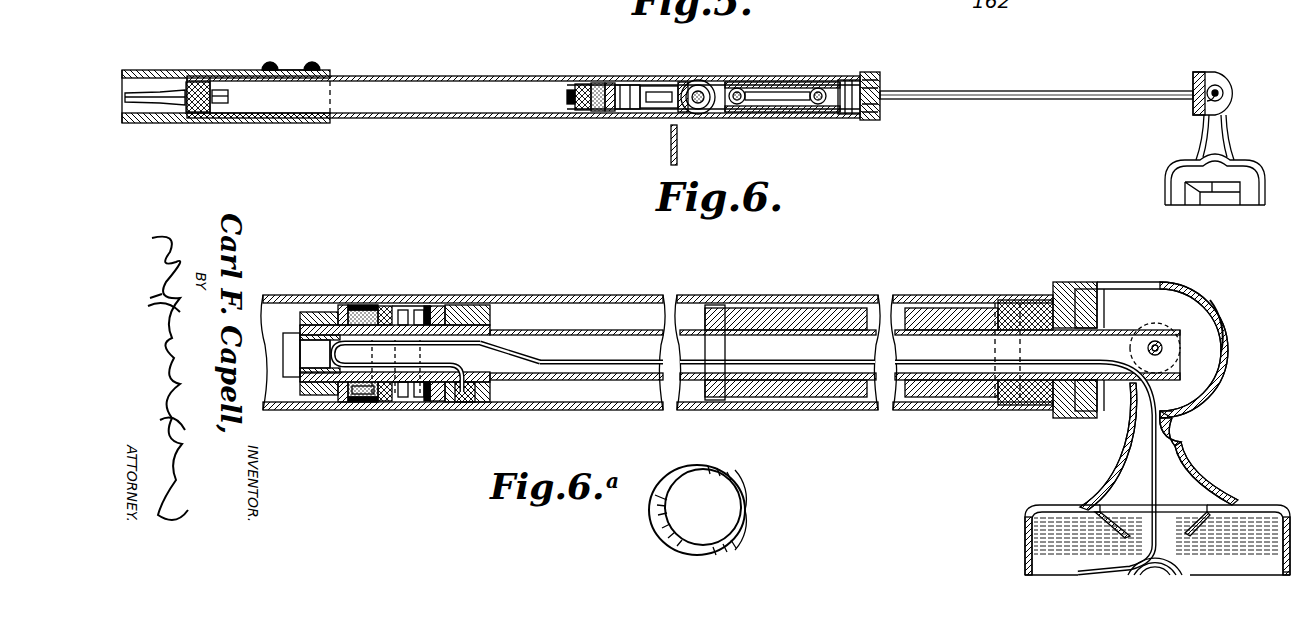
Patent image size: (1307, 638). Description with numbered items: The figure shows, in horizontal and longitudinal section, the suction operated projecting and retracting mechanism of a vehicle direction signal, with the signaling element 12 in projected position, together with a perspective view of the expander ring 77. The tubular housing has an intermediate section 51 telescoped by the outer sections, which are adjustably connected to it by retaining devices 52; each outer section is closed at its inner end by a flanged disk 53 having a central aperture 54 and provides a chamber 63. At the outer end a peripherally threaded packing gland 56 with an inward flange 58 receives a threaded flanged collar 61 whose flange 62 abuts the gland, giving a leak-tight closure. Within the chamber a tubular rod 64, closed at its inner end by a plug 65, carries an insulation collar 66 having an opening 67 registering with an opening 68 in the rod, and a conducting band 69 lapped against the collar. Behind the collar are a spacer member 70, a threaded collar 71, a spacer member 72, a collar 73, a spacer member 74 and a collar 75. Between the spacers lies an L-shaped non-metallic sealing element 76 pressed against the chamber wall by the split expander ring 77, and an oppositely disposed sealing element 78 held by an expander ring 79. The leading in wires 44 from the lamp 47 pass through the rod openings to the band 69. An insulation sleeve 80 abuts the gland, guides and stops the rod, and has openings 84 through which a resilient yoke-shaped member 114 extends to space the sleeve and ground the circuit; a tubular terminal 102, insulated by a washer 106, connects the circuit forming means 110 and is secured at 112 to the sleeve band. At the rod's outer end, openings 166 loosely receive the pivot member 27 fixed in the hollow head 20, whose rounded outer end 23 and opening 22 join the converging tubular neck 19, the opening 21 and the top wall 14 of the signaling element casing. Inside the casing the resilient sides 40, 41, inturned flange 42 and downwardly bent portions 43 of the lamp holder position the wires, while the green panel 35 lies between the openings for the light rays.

In FIG. 5, the signaling element 12 is at (1168, 178).
In FIG. 6, the signaling element 12 is at (1026, 532).
In FIG. 6, the top wall 14 is at (1252, 505).
In FIG. 5, the tubular neck 19 is at (1228, 142).
In FIG. 6, the tubular neck 19 is at (1185, 500).
In FIG. 6, the hollow head 20 is at (1200, 322).
In FIG. 6, the opening 21 is at (1138, 500).
In FIG. 6, the opening 22 is at (1185, 416).
In FIG. 5, the rounded outer end 23 is at (1212, 80).
In FIG. 6, the rounded outer end 23 is at (1226, 347).
In FIG. 5, the pivot member 27 is at (1200, 91).
In FIG. 6, the pivot member 27 is at (1163, 348).
In FIG. 6, the panel 35 is at (1282, 548).
In FIG. 6, the resilient side 40 is at (1030, 552).
In FIG. 6, the resilient side 41 is at (1282, 564).
In FIG. 6, the inturned flange 42 is at (1195, 528).
In FIG. 6, the downwardly bent portion 43 is at (1105, 520).
In FIG. 6, the leading in wires 44 is at (578, 356).
In FIG. 6, the lamp 47 is at (1158, 566).
In FIG. 5, the intermediate section 51 is at (155, 112).
In FIG. 5, the retaining devices 52 is at (312, 66).
In FIG. 5, the flanged disk 53 is at (205, 112).
In FIG. 5, the central aperture 54 is at (228, 110).
In FIG. 6, the packing gland 56 is at (1030, 300).
In FIG. 5, the flange 58 is at (845, 80).
In FIG. 6, the flange 58 is at (1010, 410).
In FIG. 5, the flanged collar 61 is at (868, 72).
In FIG. 6, the flanged collar 61 is at (1078, 288).
In FIG. 5, the flange 62 is at (881, 75).
In FIG. 6, the flange 62 is at (1075, 412).
In FIG. 5, the chamber 63 is at (497, 88).
In FIG. 6, the chamber 63 is at (567, 302).
In FIG. 5, the tubular rod 64 is at (1006, 100).
In FIG. 6, the tubular rod 64 is at (620, 330).
In FIG. 5, the plug 65 is at (567, 97).
In FIG. 6, the plug 65 is at (292, 340).
In FIG. 5, the collar 66 is at (605, 112).
In FIG. 6, the collar 66 is at (518, 322).
In FIG. 6, the opening 67 is at (458, 398).
In FIG. 6, the opening 68 is at (497, 356).
In FIG. 6, the conducting band 69 is at (478, 305).
In FIG. 6, the spacer member 70 is at (440, 310).
In FIG. 6, the collar 71 is at (407, 308).
In FIG. 6, the spacer member 72 is at (383, 315).
In FIG. 5, the collar 73 is at (598, 82).
In FIG. 6, the collar 73 is at (348, 305).
In FIG. 6, the spacer member 74 is at (330, 322).
In FIG. 5, the collar 75 is at (580, 108).
In FIG. 6, the collar 75 is at (315, 330).
In FIG. 5, the sealing element 76 is at (610, 82).
In FIG. 6, the sealing element 76 is at (430, 312).
In FIG. 6, the expander ring 77 is at (404, 394).
In FIG. 6A, the expander ring 77 is at (747, 510).
In FIG. 6, the sealing element 78 is at (360, 308).
In FIG. 6, the expander ring 79 is at (366, 396).
In FIG. 5, the sleeve 80 is at (760, 84).
In FIG. 6, the sleeve 80 is at (787, 310).
In FIG. 5, the openings 84 is at (741, 104).
In FIG. 5, the tubular terminal 102 is at (700, 80).
In FIG. 5, the washer 106 is at (684, 88).
In FIG. 5, the circuit forming means 110 is at (677, 150).
In FIG. 5, the securing point 112 is at (650, 102).
In FIG. 5, the yoke-shaped member 114 is at (780, 102).
In FIG. 5, the openings 166 is at (1238, 92).
In FIG. 6, the openings 166 is at (1158, 345).